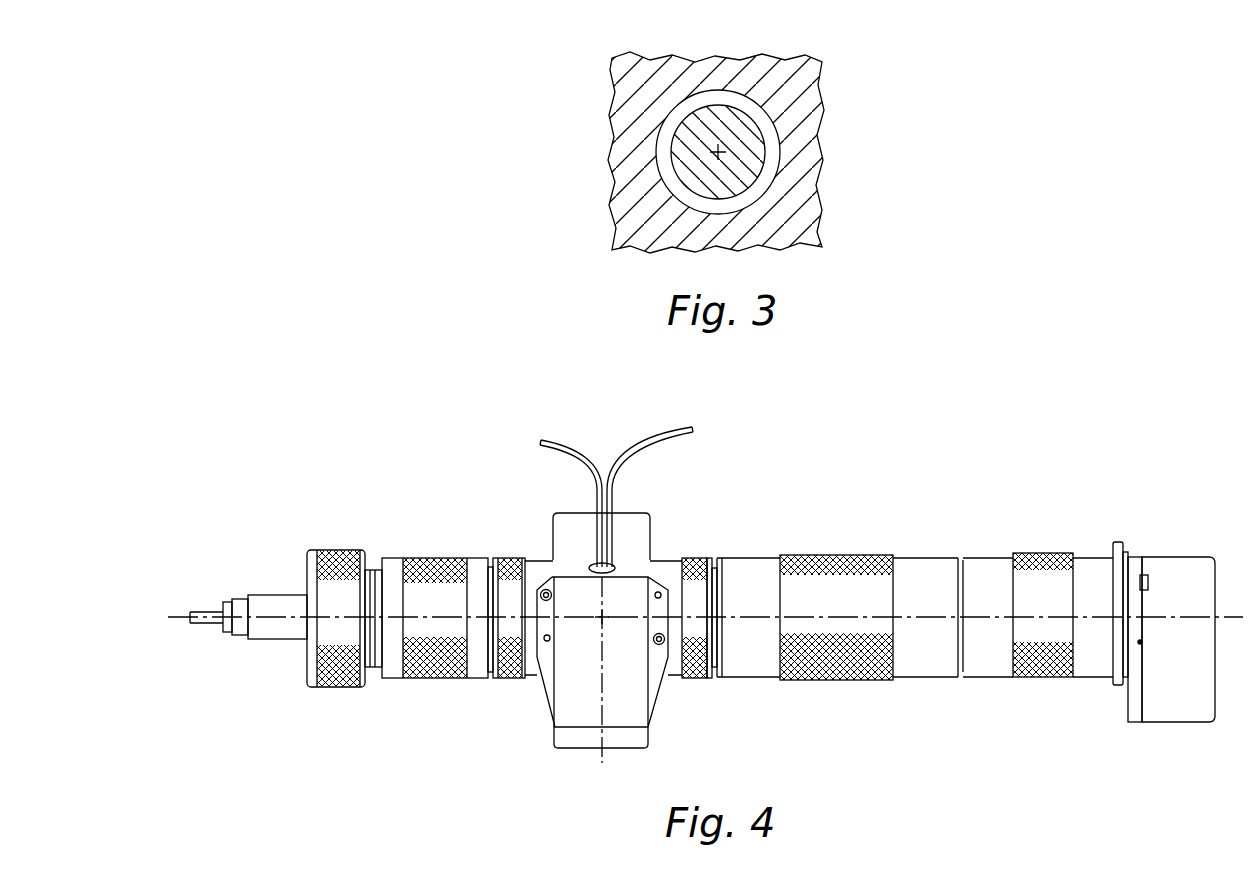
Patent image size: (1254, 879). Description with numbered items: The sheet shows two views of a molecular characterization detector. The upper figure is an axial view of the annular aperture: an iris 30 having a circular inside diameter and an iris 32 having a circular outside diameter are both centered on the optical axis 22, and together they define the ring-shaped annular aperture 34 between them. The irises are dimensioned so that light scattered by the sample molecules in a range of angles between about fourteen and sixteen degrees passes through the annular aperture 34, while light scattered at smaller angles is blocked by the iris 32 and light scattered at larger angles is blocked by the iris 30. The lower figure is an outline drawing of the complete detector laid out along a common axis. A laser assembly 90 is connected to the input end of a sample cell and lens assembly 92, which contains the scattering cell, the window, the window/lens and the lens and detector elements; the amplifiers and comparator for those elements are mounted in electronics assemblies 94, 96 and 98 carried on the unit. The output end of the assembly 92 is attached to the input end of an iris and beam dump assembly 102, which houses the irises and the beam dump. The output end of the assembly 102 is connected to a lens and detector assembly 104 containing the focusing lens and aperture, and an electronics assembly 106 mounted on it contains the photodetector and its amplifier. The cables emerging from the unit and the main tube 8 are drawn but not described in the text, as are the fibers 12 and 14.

In FIG. 4, the probe housing tube 8 is at (818, 687).
In FIG. 4, the first optical fiber 12 is at (542, 443).
In FIG. 4, the second optical fiber 14 is at (680, 432).
In FIG. 3, the optical axis 22 is at (652, 207).
In FIG. 3, the iris 30 is at (803, 138).
In FIG. 3, the iris 32 is at (680, 172).
In FIG. 3, the annular aperture 34 is at (704, 95).
In FIG. 4, the laser assembly 90 is at (418, 687).
In FIG. 4, the sample cell and lens assembly 92 is at (504, 685).
In FIG. 4, the electronics assembly 94 is at (568, 702).
In FIG. 4, the electronics assembly 96 is at (618, 740).
In FIG. 4, the electronics assembly 98 is at (570, 513).
In FIG. 4, the iris and beam dump assembly 102 is at (820, 555).
In FIG. 4, the lens and detector assembly 104 is at (997, 557).
In FIG. 4, the electronics assembly 106 is at (1160, 722).